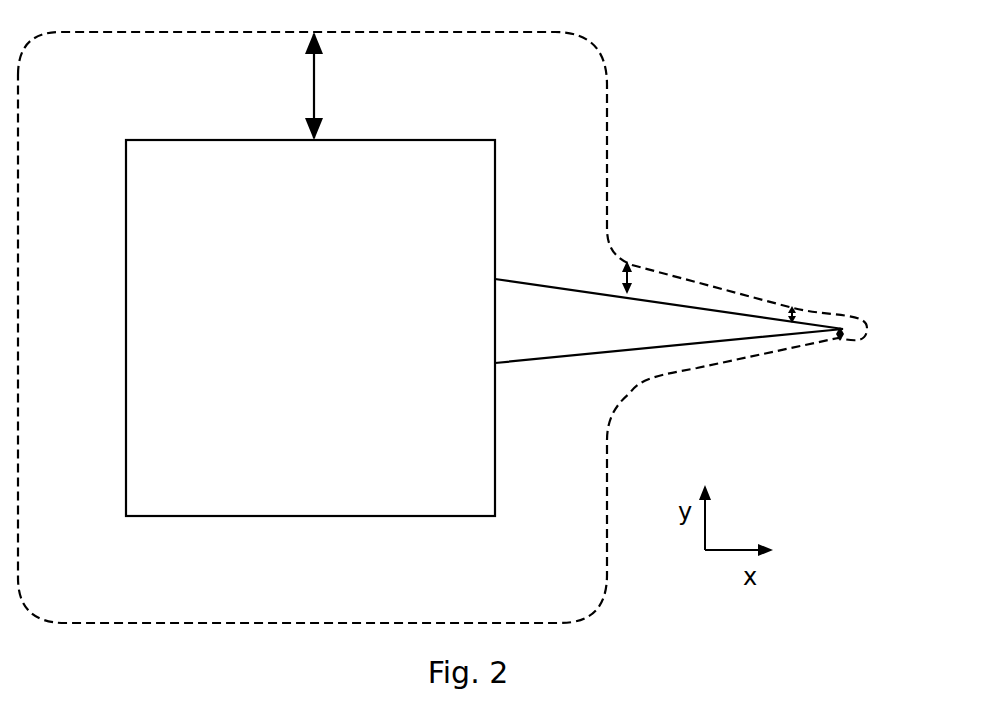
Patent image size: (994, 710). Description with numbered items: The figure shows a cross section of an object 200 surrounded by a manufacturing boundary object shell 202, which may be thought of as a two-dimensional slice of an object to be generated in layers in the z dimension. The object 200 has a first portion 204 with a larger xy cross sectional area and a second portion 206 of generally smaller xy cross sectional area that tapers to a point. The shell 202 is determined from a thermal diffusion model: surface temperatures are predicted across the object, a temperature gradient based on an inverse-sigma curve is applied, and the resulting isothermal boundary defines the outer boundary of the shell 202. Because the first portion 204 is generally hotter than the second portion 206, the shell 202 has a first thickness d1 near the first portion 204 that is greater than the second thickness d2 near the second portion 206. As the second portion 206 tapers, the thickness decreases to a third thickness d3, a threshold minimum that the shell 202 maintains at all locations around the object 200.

The object 200 is at (222, 517).
The manufacturing boundary object shell 202 is at (612, 118).
The first portion 204 is at (310, 328).
The second portion 206 is at (669, 321).
The first thickness d1 is at (314, 88).
The second thickness d2 is at (630, 282).
The third thickness d3 is at (800, 306).